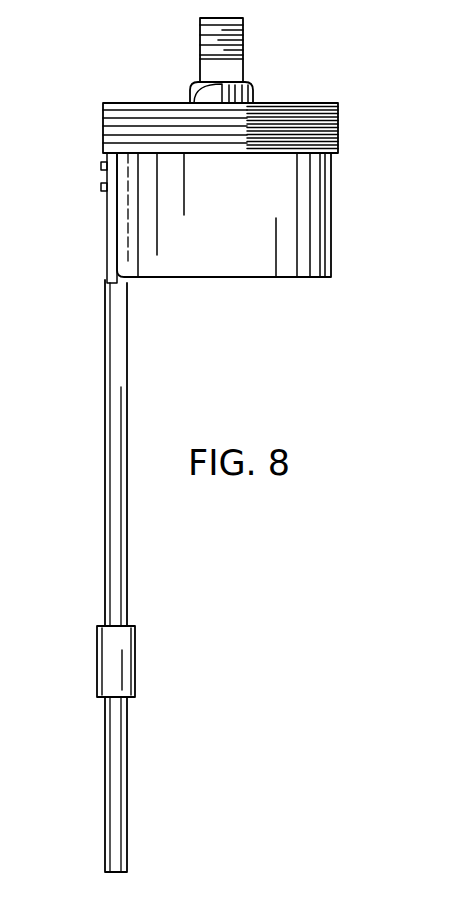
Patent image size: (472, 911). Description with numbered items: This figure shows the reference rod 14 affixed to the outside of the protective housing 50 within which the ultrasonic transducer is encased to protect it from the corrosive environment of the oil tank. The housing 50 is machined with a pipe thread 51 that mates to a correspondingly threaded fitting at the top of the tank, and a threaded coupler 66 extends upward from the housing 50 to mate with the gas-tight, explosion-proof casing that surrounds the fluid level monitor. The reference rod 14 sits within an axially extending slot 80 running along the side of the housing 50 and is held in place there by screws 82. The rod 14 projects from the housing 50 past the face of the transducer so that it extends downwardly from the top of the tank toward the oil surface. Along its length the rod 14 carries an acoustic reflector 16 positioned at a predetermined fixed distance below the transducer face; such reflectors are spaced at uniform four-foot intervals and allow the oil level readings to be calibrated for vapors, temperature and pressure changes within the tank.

The reference rod 14 is at (106, 522).
The acoustic reflector 16 is at (112, 672).
The protective housing 50 is at (343, 233).
The pipe thread 51 is at (338, 126).
The threaded coupler 66 is at (244, 43).
The axially extending slot 80 is at (108, 238).
The screws 82 is at (101, 187).